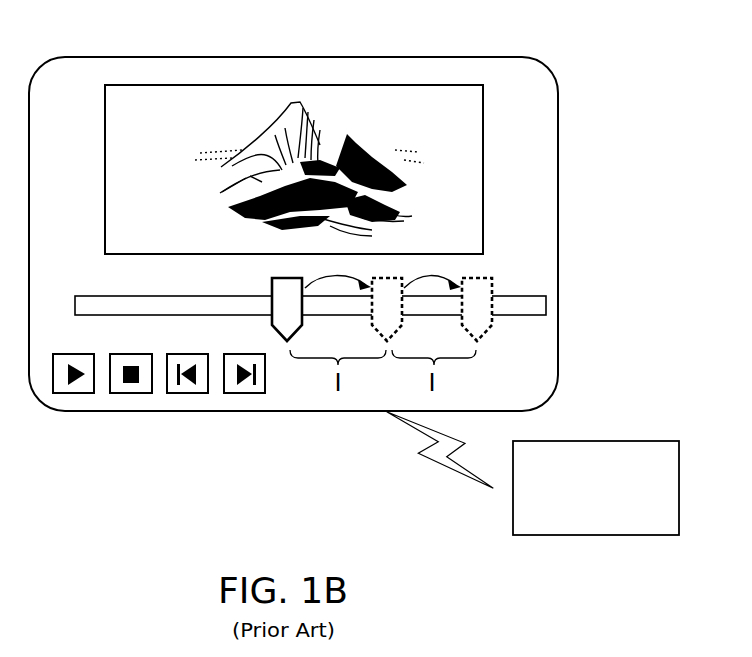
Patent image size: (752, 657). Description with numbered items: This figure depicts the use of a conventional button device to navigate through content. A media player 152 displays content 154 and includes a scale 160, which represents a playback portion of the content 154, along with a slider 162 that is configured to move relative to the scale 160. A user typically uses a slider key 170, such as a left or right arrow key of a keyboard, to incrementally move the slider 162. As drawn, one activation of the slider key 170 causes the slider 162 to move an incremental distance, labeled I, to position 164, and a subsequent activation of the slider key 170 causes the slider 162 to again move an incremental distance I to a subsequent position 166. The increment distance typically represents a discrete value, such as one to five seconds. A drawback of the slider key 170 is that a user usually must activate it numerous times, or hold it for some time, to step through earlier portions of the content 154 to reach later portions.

The media player 152 is at (173, 57).
The content 154 is at (109, 222).
The scale 160 is at (100, 296).
The slider 162 is at (272, 318).
The position 164 is at (372, 318).
The subsequent position 166 is at (462, 318).
The slider key 170 is at (585, 441).